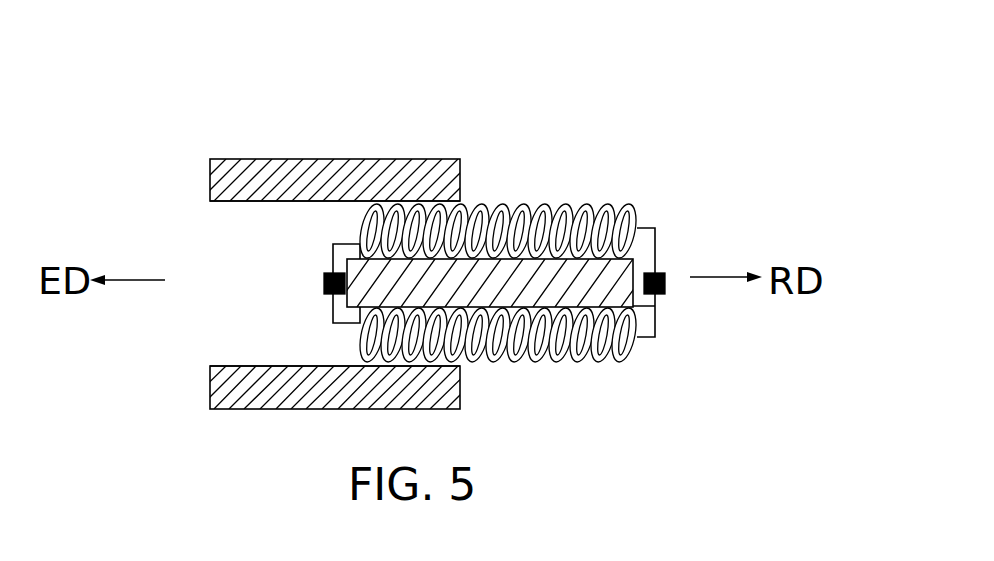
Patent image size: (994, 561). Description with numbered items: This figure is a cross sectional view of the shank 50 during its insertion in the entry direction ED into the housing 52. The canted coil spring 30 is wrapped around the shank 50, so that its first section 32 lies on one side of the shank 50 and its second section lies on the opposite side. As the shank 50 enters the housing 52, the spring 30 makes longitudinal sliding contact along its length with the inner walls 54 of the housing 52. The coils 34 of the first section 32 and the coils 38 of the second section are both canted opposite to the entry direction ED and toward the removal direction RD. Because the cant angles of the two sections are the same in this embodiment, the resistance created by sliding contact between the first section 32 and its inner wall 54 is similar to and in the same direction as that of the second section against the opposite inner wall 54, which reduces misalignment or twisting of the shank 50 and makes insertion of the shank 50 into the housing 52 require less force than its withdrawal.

The canted coil spring 30 is at (472, 378).
The first section 32 is at (470, 189).
The coils of the first section 34 is at (613, 198).
The coils of the second section 38 is at (622, 363).
The shank 50 is at (655, 300).
The housing 52 is at (296, 158).
The inner walls 54 is at (262, 206).